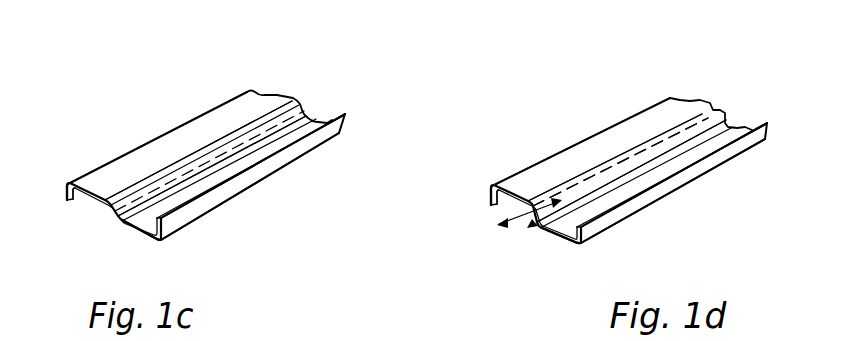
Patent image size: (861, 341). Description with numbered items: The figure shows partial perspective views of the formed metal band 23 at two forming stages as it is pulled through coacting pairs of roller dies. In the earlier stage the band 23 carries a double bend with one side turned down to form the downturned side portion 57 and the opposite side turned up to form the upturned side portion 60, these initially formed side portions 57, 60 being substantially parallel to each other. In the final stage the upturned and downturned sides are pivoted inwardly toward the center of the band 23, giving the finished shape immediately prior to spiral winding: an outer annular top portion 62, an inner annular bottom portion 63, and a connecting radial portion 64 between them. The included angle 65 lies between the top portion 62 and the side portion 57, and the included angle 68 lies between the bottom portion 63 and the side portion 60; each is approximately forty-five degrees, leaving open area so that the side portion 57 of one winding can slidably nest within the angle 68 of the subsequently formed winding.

In FIG. 1C, the band 23 is at (279, 179).
In FIG. 1D, the band 23 is at (514, 154).
In FIG. 1C, the downturned side portion 57 is at (64, 199).
In FIG. 1D, the downturned side portion 57 is at (493, 197).
In FIG. 1C, the upturned side portion 60 is at (347, 127).
In FIG. 1D, the upturned side portion 60 is at (580, 228).
In FIG. 1C, the outer annular top portion 62 is at (280, 97).
In FIG. 1D, the outer annular top portion 62 is at (668, 118).
In FIG. 1C, the inner annular bottom portion 63 is at (133, 235).
In FIG. 1D, the inner annular bottom portion 63 is at (750, 125).
In FIG. 1C, the connecting radial portion 64 is at (110, 210).
In FIG. 1D, the connecting radial portion 64 is at (727, 125).
In FIG. 1D, the included angle 65 is at (500, 210).
In FIG. 1D, the included angle 68 is at (536, 198).